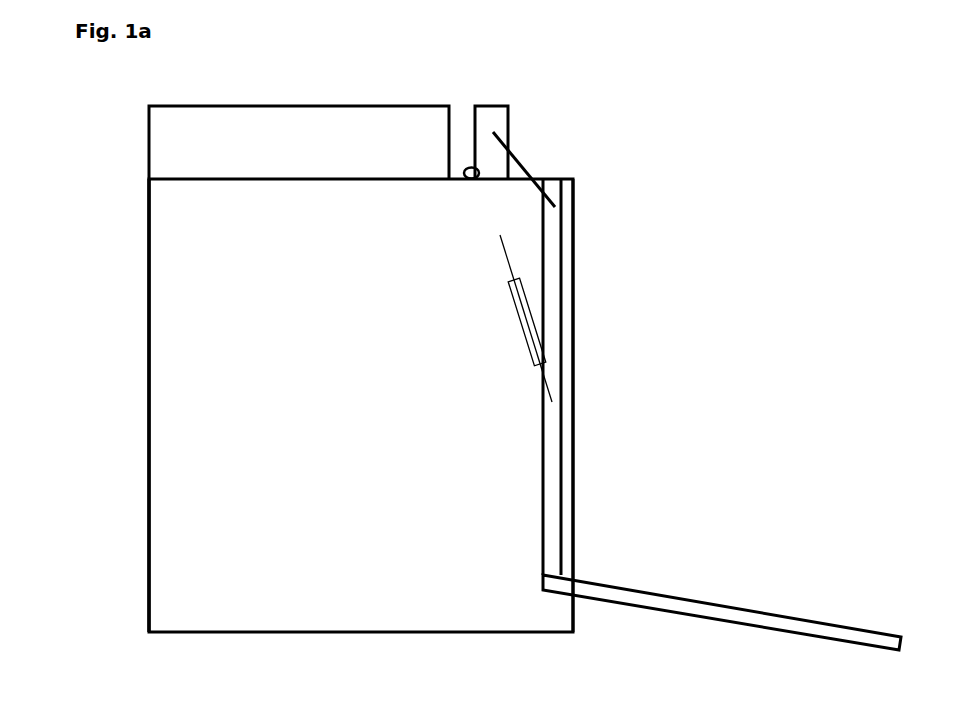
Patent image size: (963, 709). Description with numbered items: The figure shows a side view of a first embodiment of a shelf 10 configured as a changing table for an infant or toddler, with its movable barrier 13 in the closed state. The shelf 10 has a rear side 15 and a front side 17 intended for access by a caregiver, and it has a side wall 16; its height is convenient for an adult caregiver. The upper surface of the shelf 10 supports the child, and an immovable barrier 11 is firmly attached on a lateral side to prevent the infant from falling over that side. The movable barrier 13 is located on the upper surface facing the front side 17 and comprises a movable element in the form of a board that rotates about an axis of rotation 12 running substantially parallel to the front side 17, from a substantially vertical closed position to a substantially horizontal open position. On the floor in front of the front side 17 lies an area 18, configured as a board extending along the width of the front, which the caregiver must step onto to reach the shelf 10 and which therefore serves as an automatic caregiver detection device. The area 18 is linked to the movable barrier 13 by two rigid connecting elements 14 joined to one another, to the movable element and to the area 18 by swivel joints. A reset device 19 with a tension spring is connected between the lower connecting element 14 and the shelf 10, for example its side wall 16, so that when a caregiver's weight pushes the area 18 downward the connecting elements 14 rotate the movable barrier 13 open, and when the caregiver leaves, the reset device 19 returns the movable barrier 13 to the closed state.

The shelf 10 is at (122, 182).
The immovable barrier 11 is at (210, 106).
The axis of rotation 12 is at (470, 167).
The movable barrier 13 is at (510, 118).
The connecting element 14 is at (526, 158).
The rear side 15 is at (138, 396).
The side wall 16 is at (148, 328).
The front side 17 is at (593, 362).
The area 18 is at (698, 600).
The reset device 19 is at (530, 288).